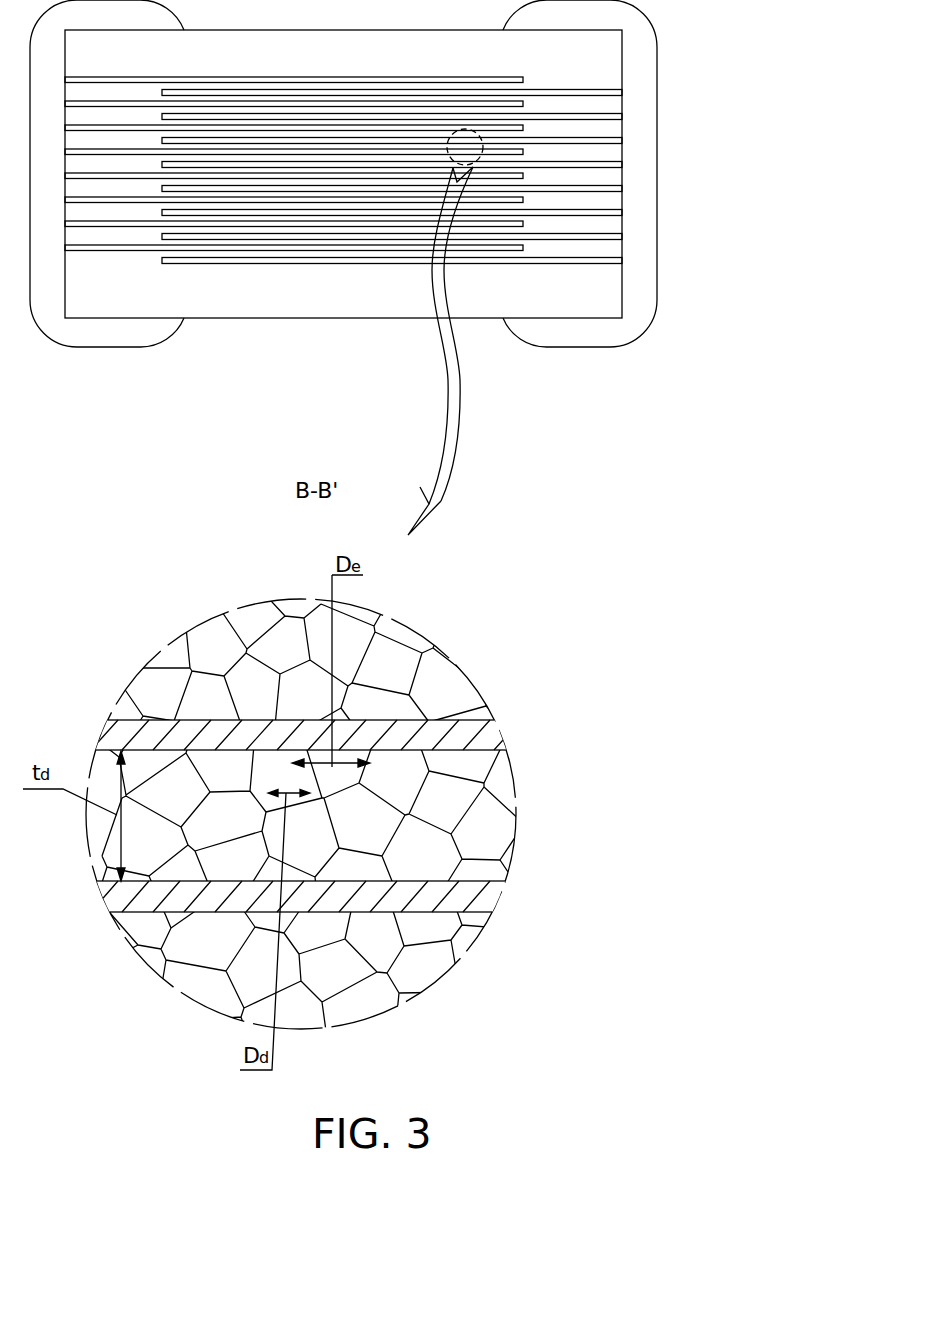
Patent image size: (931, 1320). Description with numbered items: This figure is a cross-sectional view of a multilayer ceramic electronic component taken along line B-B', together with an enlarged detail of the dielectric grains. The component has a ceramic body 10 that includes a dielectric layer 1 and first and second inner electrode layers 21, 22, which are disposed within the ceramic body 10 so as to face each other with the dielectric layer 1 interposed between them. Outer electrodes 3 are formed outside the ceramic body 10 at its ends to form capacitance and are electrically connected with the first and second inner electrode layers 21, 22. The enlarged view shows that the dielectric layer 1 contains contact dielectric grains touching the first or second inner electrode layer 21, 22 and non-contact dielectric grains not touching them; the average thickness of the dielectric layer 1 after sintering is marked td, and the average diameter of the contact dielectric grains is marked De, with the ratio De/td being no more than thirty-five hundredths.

The dielectric layer 1 is at (600, 152).
The outer electrode 3 is at (113, 339).
The ceramic body 10 is at (345, 303).
The first inner electrode layer 21 is at (530, 138).
The second inner electrode layer 22 is at (515, 152).